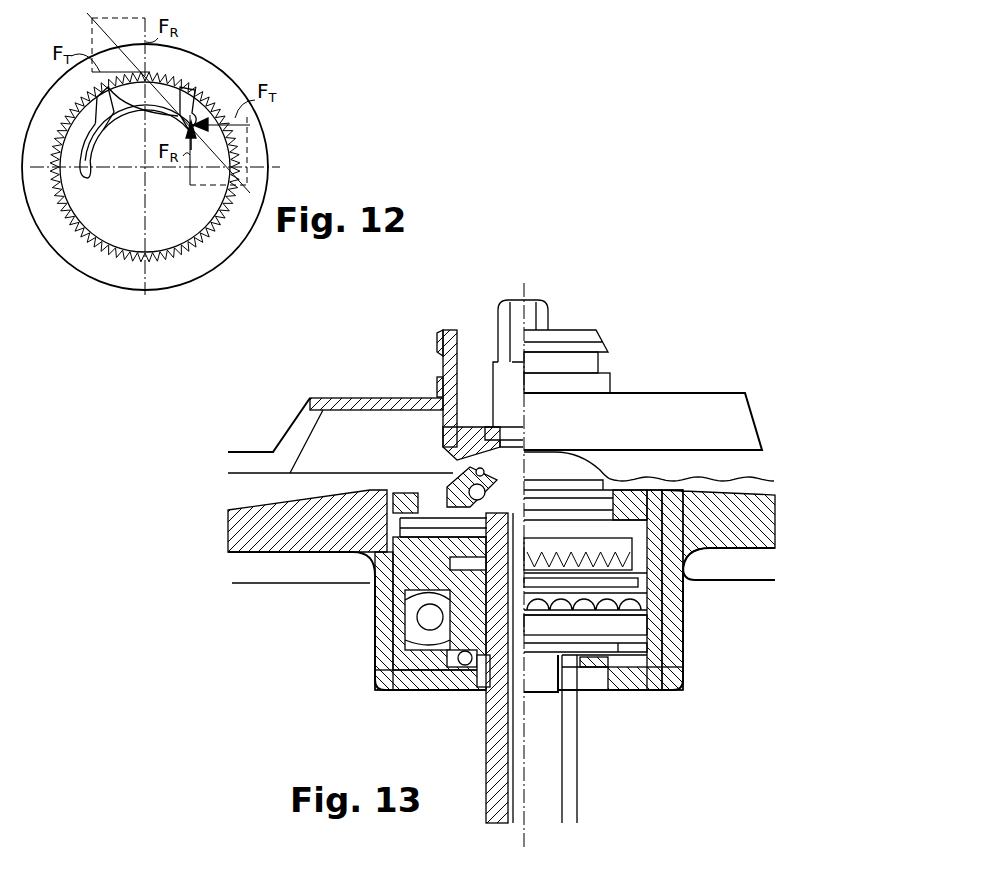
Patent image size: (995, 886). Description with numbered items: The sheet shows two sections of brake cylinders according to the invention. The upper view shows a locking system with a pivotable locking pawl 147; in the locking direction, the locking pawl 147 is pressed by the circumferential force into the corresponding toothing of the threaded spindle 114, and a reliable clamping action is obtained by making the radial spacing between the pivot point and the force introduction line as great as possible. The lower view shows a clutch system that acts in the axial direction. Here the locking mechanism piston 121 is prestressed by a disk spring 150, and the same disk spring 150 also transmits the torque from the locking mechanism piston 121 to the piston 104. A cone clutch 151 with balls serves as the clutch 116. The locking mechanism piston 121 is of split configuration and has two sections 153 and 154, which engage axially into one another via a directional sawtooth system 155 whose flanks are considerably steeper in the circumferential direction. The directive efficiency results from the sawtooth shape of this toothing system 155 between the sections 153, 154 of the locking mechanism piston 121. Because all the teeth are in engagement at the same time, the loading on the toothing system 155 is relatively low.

In FIG. 12, the locking pawl 147 is at (168, 88).
In FIG. 13, the piston 104 is at (330, 512).
In FIG. 13, the disk spring 150 is at (413, 513).
In FIG. 13, the directional sawtooth system 155 is at (559, 556).
In FIG. 13, the section of the locking mechanism piston 153 is at (614, 548).
In FIG. 13, the locking mechanism piston 121 is at (377, 620).
In FIG. 13, the clutch 116 is at (377, 656).
In FIG. 13, the cone clutch 151 is at (428, 623).
In FIG. 13, the section of the locking mechanism piston 154 is at (462, 666).
In FIG. 13, the threaded spindle 114 is at (545, 625).